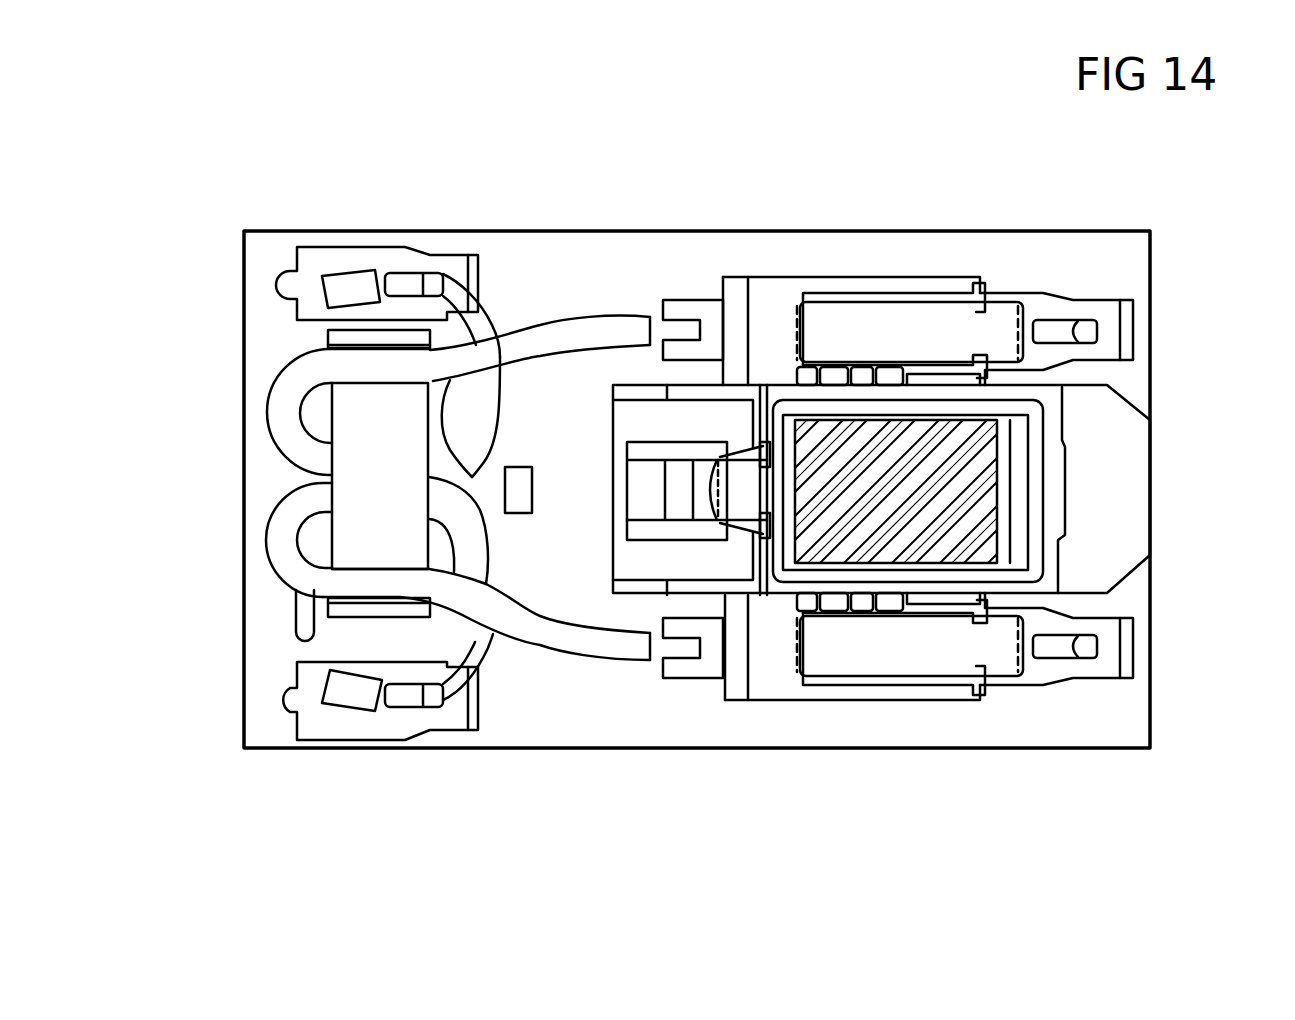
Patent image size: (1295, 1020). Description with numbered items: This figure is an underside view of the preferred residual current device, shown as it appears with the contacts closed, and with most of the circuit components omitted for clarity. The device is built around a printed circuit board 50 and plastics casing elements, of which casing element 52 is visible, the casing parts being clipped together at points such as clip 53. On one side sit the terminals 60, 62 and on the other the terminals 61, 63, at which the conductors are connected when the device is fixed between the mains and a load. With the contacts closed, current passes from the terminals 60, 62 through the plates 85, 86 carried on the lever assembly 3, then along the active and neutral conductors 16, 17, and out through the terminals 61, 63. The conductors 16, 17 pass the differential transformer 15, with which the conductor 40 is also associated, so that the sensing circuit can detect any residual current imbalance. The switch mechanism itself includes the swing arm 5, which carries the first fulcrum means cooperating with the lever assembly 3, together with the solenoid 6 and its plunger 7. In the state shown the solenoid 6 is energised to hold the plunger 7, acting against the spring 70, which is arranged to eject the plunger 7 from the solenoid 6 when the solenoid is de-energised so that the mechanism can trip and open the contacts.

The lever assembly 3 is at (957, 288).
The swing arm 5 is at (680, 488).
The solenoid 6 is at (1000, 442).
The plunger 7 is at (748, 486).
The differential transformer 15 is at (377, 520).
The active conductor 16 is at (548, 330).
The neutral conductor 17 is at (563, 638).
The conductor 40 is at (290, 472).
The printed circuit board 50 is at (890, 246).
The plastics casing element 52 is at (1113, 541).
The clip 53 is at (527, 465).
The terminal 60 is at (1105, 310).
The terminal 61 is at (318, 262).
The terminal 62 is at (1112, 650).
The terminal 63 is at (317, 717).
The spring 70 is at (757, 530).
The plate 85 is at (887, 330).
The plate 86 is at (912, 645).